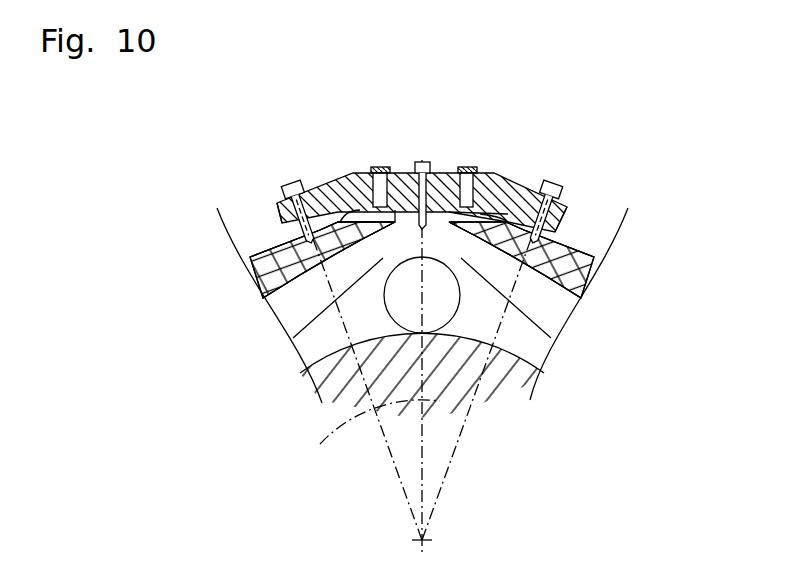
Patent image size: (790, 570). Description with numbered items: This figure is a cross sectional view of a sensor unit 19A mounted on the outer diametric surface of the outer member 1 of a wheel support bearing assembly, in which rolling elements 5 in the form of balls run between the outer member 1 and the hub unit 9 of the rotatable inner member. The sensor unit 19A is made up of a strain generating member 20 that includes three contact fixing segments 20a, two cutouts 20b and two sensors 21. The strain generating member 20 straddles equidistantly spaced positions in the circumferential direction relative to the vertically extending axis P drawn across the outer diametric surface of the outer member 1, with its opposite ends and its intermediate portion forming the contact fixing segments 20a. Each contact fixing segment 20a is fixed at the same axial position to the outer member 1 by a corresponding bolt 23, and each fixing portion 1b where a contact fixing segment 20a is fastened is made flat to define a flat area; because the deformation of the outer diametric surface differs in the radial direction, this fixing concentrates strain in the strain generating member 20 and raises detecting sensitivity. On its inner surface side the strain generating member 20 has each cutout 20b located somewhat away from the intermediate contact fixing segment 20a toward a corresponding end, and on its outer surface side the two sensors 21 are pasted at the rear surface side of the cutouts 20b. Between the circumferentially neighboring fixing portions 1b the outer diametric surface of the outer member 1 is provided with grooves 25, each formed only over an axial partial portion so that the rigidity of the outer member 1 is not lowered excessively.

The outer member 1 is at (443, 330).
The fixing portion 1b is at (265, 278).
The rolling element 5 is at (325, 363).
The hub unit 9 is at (507, 392).
The sensor unit 19A is at (430, 142).
The strain generating member 20 is at (430, 138).
The contact fixing segment 20a is at (287, 232).
The cutout 20b is at (345, 180).
The sensor 21 is at (382, 167).
The bolt 23 is at (289, 183).
The groove 25 is at (330, 318).
The vertically extending axis P is at (332, 440).